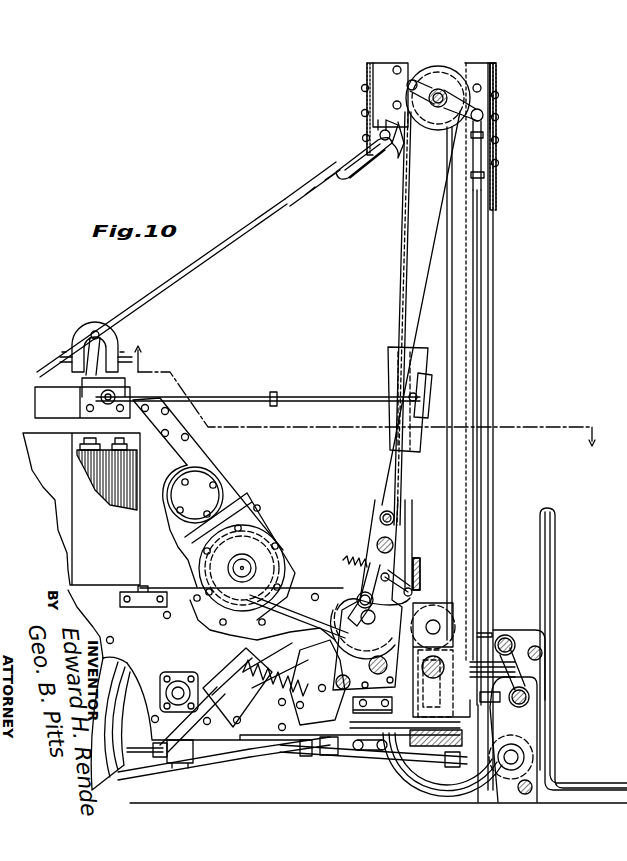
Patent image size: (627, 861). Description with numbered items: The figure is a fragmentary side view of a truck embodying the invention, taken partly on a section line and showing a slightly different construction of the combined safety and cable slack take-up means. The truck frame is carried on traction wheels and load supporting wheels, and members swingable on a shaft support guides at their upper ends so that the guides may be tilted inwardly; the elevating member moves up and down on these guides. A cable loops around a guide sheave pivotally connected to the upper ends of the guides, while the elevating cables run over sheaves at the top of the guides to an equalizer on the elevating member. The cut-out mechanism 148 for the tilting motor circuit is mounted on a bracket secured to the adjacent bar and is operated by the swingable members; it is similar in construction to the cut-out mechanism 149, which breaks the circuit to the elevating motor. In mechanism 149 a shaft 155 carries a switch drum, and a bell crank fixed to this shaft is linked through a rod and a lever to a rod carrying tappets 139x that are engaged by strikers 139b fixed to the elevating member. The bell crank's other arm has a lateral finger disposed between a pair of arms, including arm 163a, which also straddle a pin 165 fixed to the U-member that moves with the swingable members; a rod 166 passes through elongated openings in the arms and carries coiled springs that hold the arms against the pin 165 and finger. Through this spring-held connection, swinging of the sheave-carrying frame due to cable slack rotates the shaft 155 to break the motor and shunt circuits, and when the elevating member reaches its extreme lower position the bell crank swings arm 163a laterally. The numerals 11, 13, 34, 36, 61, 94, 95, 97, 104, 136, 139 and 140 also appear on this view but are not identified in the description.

The section line 11 is at (367, 396).
The wheel 13 is at (405, 765).
The rivet strip 34 is at (366, 96).
The rivet strip 36 is at (497, 103).
The base 61 is at (378, 786).
The spring assembly 94 is at (221, 664).
The turnbuckle 95 is at (364, 150).
The hook 97 is at (400, 142).
The rod 104 is at (140, 385).
The strut 136 is at (412, 492).
The plate 139 is at (492, 735).
The strikers 139b is at (492, 632).
The tappets 139x is at (477, 180).
The roller 140 is at (495, 748).
The cut-out mechanism 148 is at (82, 348).
The cut-out mechanism 149 is at (365, 592).
The shaft 155 is at (348, 620).
The arm 163a is at (375, 550).
The pin 165 is at (406, 562).
The rod 166 is at (342, 557).